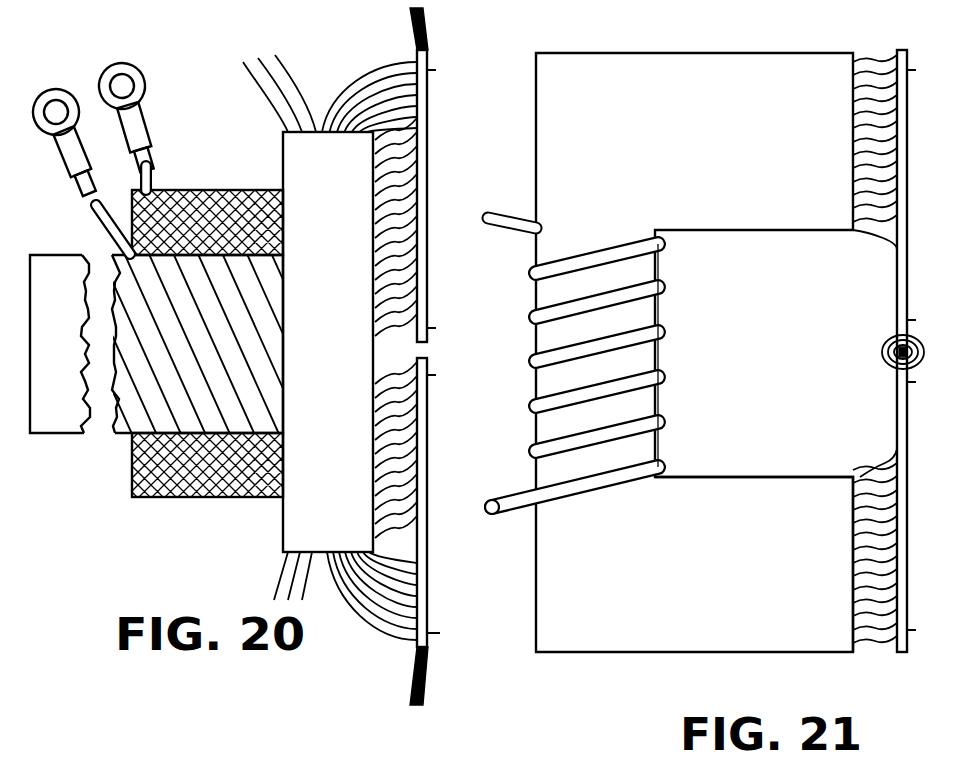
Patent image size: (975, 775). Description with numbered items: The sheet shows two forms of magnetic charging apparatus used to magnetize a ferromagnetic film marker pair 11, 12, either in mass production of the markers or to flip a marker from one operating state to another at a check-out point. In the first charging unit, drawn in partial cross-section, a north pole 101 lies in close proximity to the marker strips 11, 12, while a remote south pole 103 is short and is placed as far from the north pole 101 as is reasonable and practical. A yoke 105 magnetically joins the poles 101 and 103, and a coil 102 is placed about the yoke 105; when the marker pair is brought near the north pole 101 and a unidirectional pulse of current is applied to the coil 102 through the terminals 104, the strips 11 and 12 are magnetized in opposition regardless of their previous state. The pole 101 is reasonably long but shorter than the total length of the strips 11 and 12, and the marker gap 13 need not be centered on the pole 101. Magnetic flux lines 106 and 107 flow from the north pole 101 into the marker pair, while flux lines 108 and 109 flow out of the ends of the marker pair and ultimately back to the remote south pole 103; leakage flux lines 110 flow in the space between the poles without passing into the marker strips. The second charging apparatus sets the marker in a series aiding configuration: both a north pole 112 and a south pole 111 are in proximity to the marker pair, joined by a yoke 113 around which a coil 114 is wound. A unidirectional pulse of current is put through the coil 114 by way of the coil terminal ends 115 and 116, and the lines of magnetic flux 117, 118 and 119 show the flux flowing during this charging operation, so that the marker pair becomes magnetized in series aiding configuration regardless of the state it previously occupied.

In FIG. 20, the ferromagnetic film marker strip 11 is at (427, 146).
In FIG. 21, the ferromagnetic film marker strip 11 is at (900, 282).
In FIG. 20, the ferromagnetic film marker strip 12 is at (427, 565).
In FIG. 20, the marker gap 13 is at (428, 351).
In FIG. 21, the marker gap 13 is at (903, 414).
In FIG. 20, the north pole 101 is at (300, 165).
In FIG. 20, the coil 102 is at (196, 190).
In FIG. 20, the south pole 103 is at (50, 256).
In FIG. 20, the terminals 104 is at (97, 155).
In FIG. 20, the yoke 105 is at (152, 402).
In FIG. 20, the magnetic flux lines 106 is at (372, 103).
In FIG. 20, the magnetic flux lines 107 is at (380, 592).
In FIG. 20, the flux lines 108 is at (412, 36).
In FIG. 20, the flux lines 109 is at (412, 682).
In FIG. 20, the stray flux lines 110 is at (258, 84).
In FIG. 21, the south pole 111 is at (750, 193).
In FIG. 21, the north pole 112 is at (735, 508).
In FIG. 21, the yoke 113 is at (640, 404).
In FIG. 21, the coil 114 is at (656, 338).
In FIG. 21, the coil terminal end 115 is at (500, 226).
In FIG. 21, the coil terminal end 116 is at (494, 508).
In FIG. 21, the lines of magnetic flux 117 is at (875, 205).
In FIG. 21, the lines of magnetic flux 118 is at (872, 492).
In FIG. 21, the lines of magnetic flux 119 is at (884, 350).